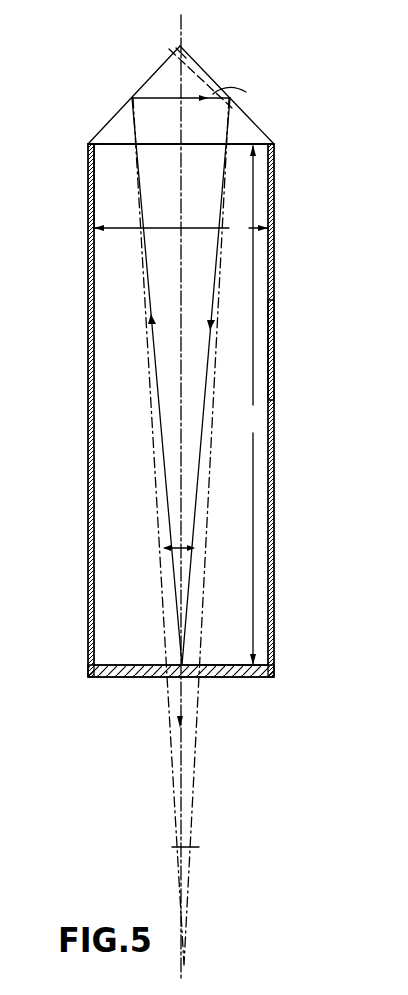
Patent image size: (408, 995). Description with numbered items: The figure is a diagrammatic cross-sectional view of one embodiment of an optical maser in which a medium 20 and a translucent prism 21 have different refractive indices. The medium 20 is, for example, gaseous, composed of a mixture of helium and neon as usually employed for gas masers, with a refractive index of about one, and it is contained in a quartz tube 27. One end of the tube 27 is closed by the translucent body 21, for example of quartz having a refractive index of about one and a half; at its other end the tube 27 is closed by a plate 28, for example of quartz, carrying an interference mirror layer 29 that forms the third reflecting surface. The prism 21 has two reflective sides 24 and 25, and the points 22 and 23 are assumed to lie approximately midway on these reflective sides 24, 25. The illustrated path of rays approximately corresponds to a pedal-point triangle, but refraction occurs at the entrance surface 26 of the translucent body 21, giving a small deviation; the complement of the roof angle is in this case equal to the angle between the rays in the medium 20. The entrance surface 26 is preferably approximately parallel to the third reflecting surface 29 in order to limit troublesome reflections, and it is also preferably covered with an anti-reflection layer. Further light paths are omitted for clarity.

The medium 20 is at (243, 475).
The translucent prism 21 is at (196, 83).
The point on reflective side 22 is at (132, 98).
The point on reflective side 23 is at (231, 98).
The reflective side 24 is at (155, 74).
The reflective side 25 is at (260, 129).
The entrance surface 26 is at (115, 151).
The quartz tube 27 is at (275, 345).
The plate 28 is at (247, 678).
The interference mirror layer 29 is at (230, 662).